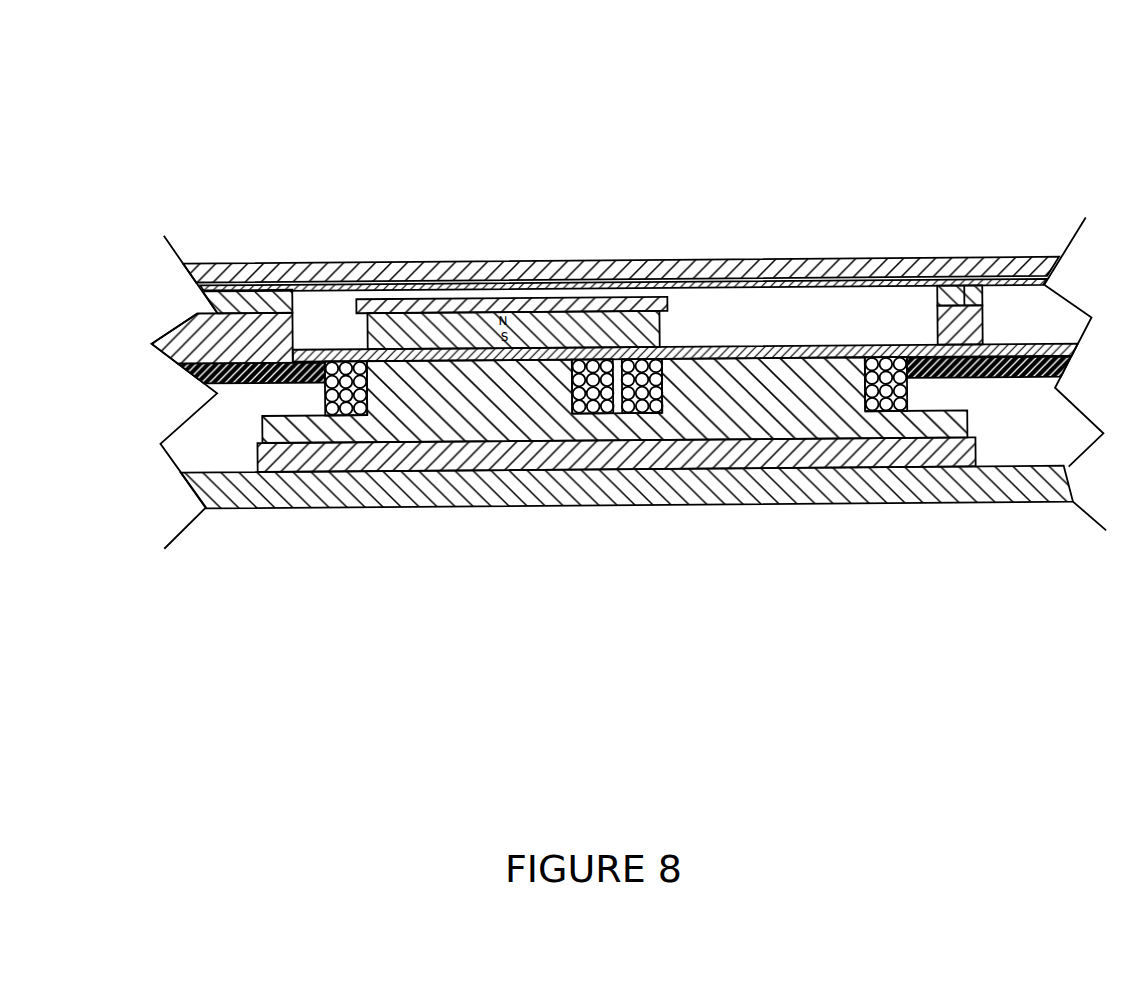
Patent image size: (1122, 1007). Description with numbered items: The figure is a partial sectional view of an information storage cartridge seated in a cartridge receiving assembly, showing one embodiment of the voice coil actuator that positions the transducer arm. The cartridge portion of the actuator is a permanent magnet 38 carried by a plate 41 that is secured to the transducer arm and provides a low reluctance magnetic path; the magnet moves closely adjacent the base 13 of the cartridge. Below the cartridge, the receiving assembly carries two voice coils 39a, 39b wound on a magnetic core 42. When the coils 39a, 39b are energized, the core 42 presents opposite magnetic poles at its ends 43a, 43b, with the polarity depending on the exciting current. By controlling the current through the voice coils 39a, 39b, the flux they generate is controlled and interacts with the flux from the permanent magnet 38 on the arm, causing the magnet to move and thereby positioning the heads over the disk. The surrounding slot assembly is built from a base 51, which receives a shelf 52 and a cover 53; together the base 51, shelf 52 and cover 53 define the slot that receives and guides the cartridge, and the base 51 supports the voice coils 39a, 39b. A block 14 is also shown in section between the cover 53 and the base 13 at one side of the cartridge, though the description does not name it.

The base 13 is at (705, 350).
The spacer block 14 is at (962, 282).
The permanent magnet 38 is at (385, 330).
The voice coil 39a is at (347, 400).
The voice coil 39b is at (640, 405).
The plate 41 is at (582, 305).
The magnetic core 42 is at (537, 425).
The core end 43a is at (437, 380).
The core end 43b is at (757, 375).
The base 51 is at (965, 482).
The shelf 52 is at (232, 373).
The cover 53 is at (856, 257).